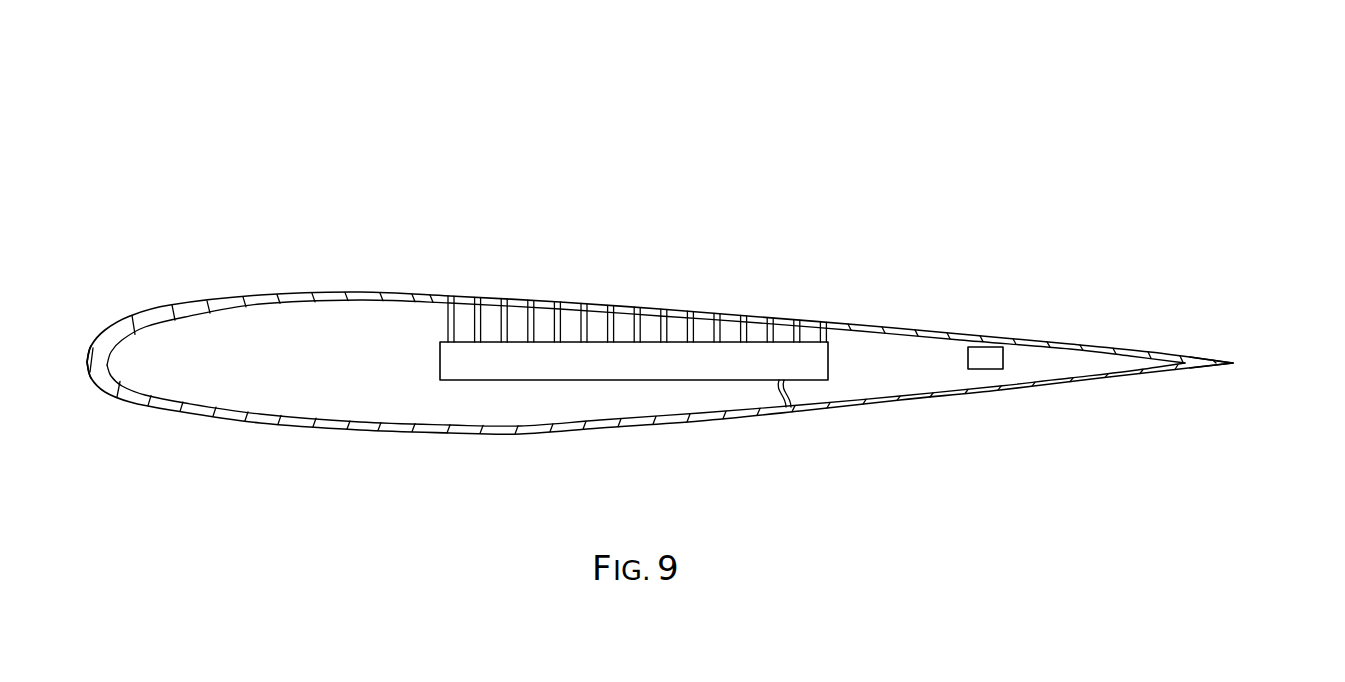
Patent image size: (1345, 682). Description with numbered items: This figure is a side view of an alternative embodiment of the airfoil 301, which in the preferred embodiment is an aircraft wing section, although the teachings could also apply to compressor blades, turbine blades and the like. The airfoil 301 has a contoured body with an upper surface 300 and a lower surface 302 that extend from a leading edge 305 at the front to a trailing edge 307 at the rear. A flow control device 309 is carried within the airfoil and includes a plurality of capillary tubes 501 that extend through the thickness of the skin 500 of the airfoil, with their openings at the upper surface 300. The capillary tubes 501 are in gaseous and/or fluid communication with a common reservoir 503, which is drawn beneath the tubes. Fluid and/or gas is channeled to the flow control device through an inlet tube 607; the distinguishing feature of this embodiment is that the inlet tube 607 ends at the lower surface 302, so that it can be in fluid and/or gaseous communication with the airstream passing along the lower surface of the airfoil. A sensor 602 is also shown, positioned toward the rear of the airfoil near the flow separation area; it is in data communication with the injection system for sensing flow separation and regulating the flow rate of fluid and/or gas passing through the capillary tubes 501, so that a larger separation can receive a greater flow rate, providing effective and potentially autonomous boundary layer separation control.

The upper surface 300 is at (686, 377).
The airfoil 301 is at (912, 107).
The lower surface 302 is at (251, 467).
The leading edge 305 is at (75, 363).
The trailing edge 307 is at (1251, 360).
The flow control device 309 is at (668, 277).
The skin 500 is at (922, 330).
The capillary tubes 501 is at (500, 297).
The common reservoir 503 is at (635, 382).
The sensor 602 is at (985, 369).
The inlet tube 607 is at (795, 405).